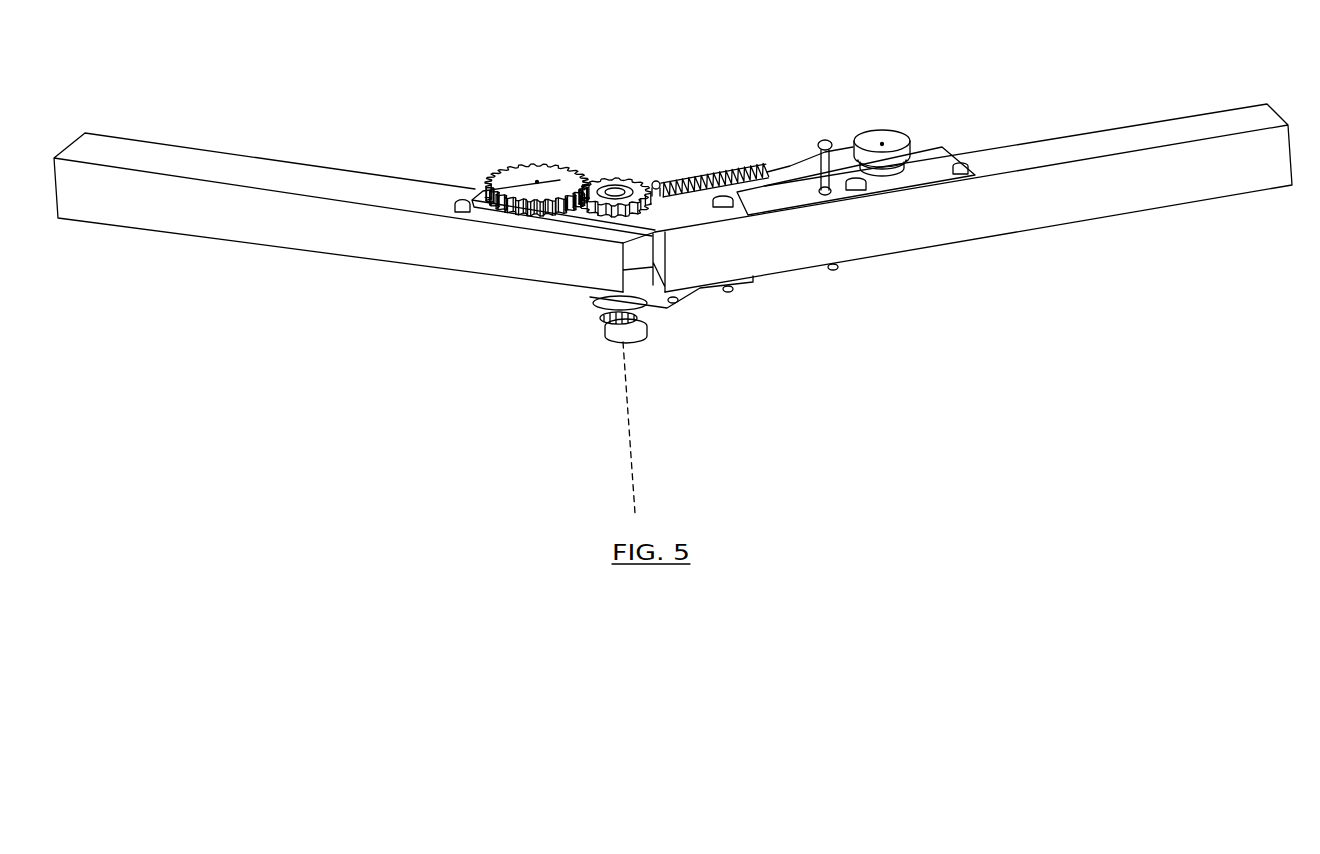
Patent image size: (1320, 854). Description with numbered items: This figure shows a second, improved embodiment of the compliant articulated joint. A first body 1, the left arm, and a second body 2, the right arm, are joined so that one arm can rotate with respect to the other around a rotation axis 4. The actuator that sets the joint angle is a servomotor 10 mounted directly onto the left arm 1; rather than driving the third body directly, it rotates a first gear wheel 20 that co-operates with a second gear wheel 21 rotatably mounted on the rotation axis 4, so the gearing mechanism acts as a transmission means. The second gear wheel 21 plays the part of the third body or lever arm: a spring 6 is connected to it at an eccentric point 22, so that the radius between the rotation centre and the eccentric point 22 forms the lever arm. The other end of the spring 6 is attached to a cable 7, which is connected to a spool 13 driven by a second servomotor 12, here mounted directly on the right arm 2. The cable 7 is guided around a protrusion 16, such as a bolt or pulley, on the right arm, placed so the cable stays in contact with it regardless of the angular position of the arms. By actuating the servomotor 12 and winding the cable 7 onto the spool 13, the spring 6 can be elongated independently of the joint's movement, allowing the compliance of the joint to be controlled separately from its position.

The first body 1 is at (153, 155).
The second body 2 is at (1155, 130).
The rotation axis 4 is at (628, 427).
The spring 6 is at (727, 170).
The cable 7 is at (807, 168).
The servomotor 10 is at (480, 207).
The servomotor 12 is at (922, 180).
The spool 13 is at (898, 132).
The protrusion 16 is at (825, 140).
The first gear wheel 20 is at (513, 168).
The second gear wheel 21 is at (623, 178).
The eccentric point 22 is at (659, 181).